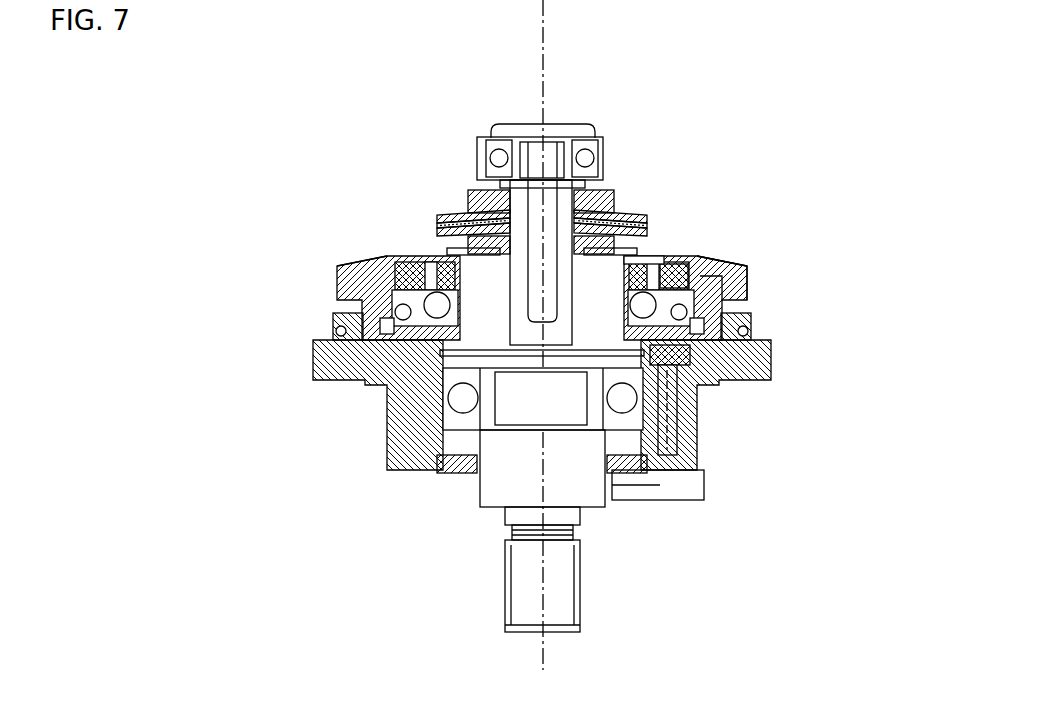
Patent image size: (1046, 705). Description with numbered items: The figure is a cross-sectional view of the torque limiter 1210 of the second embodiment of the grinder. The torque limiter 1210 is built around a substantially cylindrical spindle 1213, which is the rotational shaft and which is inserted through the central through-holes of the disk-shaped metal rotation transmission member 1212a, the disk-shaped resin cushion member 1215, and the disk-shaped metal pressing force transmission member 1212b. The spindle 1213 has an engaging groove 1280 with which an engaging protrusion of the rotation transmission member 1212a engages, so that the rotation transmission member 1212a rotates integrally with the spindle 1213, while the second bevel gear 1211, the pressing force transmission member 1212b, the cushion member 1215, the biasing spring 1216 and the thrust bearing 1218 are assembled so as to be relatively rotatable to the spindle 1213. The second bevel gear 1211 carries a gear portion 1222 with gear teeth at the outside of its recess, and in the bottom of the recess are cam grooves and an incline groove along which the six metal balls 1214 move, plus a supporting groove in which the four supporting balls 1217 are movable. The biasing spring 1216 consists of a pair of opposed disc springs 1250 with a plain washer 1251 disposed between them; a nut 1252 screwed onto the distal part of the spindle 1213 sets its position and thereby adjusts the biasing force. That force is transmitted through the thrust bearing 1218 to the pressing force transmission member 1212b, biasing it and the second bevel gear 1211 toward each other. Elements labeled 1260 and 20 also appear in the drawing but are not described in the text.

The torque limiter 1210 is at (597, 78).
The second bevel gear 1211 is at (733, 290).
The rotation transmission member 1212a is at (705, 268).
The pressing force transmission member 1212b is at (655, 258).
The spindle 1213 is at (510, 457).
The ball 1214 is at (672, 258).
The cushion member 1215 is at (647, 270).
The biasing spring 1216 is at (252, 60).
The supporting ball 1217 is at (712, 285).
The thrust bearing 1218 is at (463, 249).
The gear portion 1222 is at (745, 268).
The disc spring 1250 is at (440, 216).
The plain washer 1251 is at (440, 224).
The nut 1252 is at (475, 190).
The fastener 1260 is at (513, 158).
The engaging groove 1280 is at (548, 290).
The base 20 is at (345, 375).